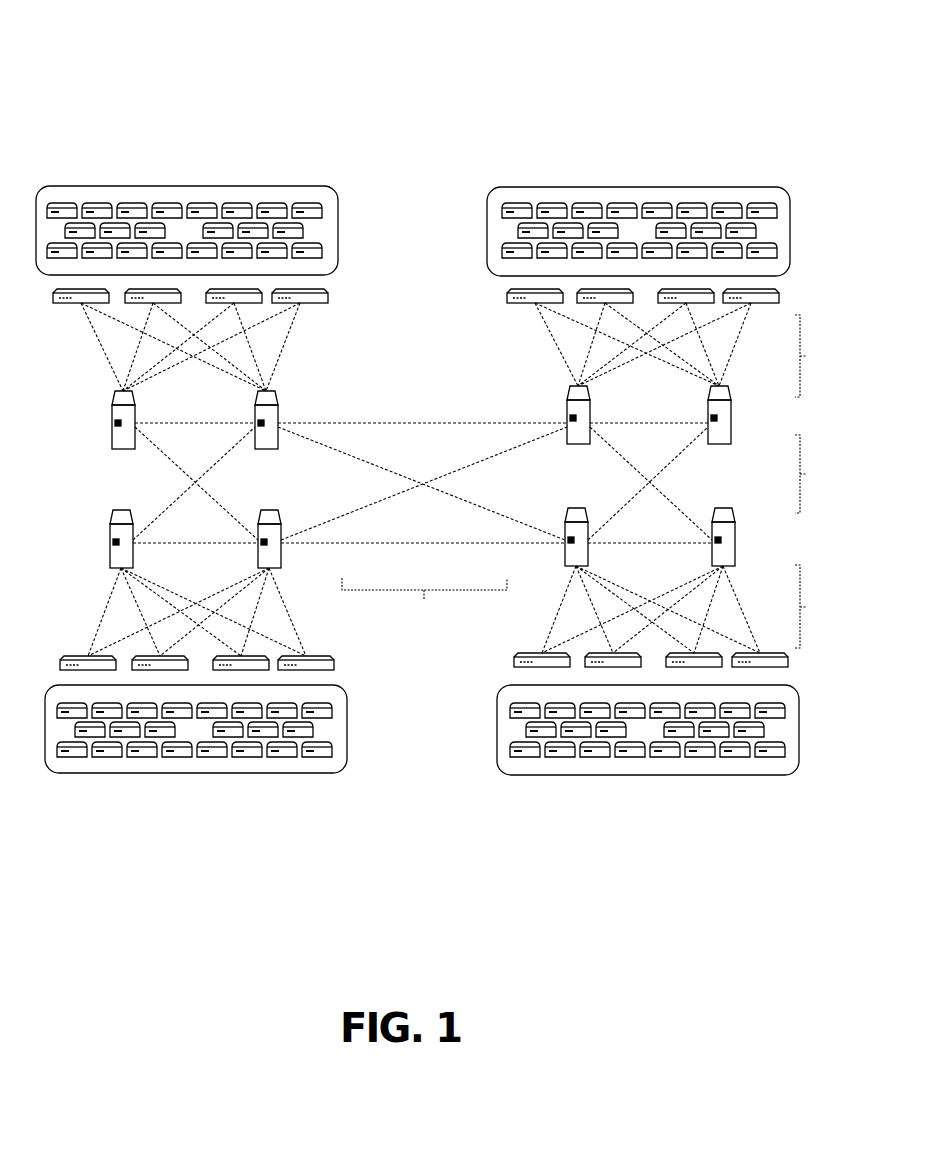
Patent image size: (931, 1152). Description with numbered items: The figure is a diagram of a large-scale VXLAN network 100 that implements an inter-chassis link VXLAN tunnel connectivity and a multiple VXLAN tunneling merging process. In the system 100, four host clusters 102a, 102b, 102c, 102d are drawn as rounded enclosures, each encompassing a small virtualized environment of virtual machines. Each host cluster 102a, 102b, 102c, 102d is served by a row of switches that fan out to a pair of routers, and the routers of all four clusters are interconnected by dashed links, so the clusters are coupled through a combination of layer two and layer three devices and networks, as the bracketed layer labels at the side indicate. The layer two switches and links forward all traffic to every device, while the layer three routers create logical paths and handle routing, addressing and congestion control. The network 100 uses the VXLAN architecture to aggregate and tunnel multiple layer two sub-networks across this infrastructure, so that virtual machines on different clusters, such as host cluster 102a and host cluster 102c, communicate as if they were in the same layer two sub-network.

The VXLAN network 100 is at (196, 42).
The host cluster 102a is at (187, 230).
The host cluster 102b is at (196, 734).
The host cluster 102c is at (638, 232).
The host cluster 102d is at (648, 732).